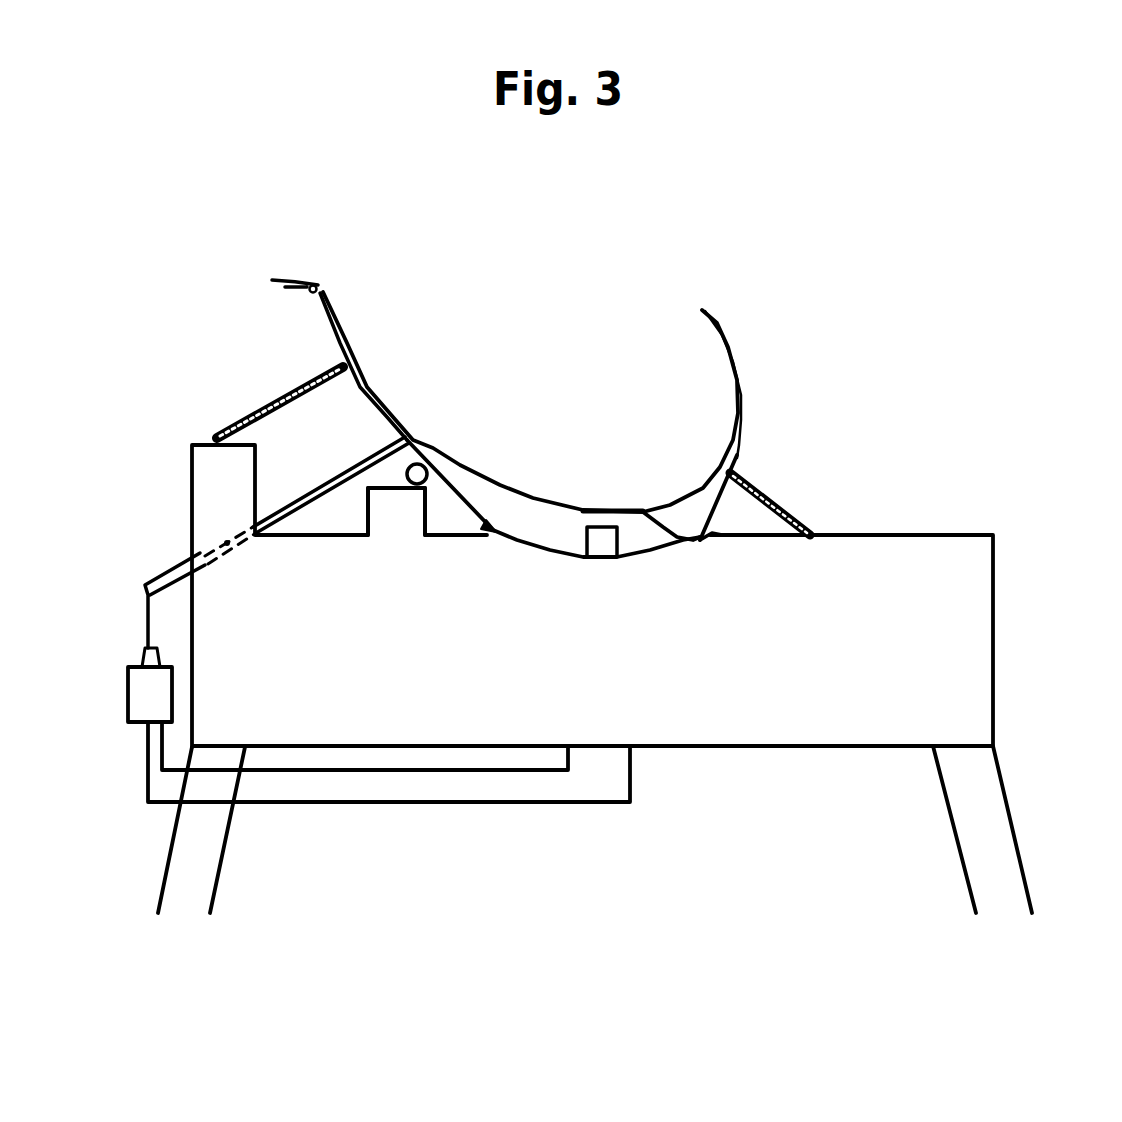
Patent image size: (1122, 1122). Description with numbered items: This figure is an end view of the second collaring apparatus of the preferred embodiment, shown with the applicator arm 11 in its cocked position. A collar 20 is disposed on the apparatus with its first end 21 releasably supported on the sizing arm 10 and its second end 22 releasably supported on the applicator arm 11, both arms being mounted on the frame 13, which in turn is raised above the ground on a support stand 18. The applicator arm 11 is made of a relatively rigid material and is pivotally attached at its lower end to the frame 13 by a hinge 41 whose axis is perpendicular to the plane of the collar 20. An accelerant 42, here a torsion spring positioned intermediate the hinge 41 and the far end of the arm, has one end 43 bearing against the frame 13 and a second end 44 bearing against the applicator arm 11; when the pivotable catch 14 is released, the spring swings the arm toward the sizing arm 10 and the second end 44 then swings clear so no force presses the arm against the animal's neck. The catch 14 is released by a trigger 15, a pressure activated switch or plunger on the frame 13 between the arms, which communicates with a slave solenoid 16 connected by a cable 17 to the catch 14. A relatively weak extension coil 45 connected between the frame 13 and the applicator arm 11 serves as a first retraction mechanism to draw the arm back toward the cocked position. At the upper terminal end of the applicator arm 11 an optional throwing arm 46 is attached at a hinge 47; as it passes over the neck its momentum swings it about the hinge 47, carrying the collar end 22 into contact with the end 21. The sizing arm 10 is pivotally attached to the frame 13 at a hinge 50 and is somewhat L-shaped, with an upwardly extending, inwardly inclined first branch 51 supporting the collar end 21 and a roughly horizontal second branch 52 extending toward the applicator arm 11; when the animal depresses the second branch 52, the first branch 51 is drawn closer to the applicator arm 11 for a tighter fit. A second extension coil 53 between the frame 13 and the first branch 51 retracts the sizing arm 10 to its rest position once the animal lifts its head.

The sizing arm 10 is at (717, 340).
The applicator arm 11 is at (452, 485).
The frame 13 is at (993, 646).
The catch 14 is at (378, 447).
The trigger 15 is at (583, 530).
The slave solenoid 16 is at (140, 695).
The cable 17 is at (147, 612).
The support stand 18 is at (1013, 820).
The collar 20 is at (500, 480).
The first end of collar 21 is at (732, 357).
The second end of collar 22 is at (287, 278).
The hinge 41 is at (487, 533).
The accelerant 42 is at (423, 437).
The first end of spring 43 is at (405, 492).
The second end of spring 44 is at (413, 447).
The extension coil 45 is at (265, 402).
The throwing arm 46 is at (303, 287).
The hinge 47 is at (322, 285).
The hinge 50 is at (707, 543).
The first branch 51 is at (737, 457).
The second branch 52 is at (660, 520).
The extension coil 53 is at (783, 510).